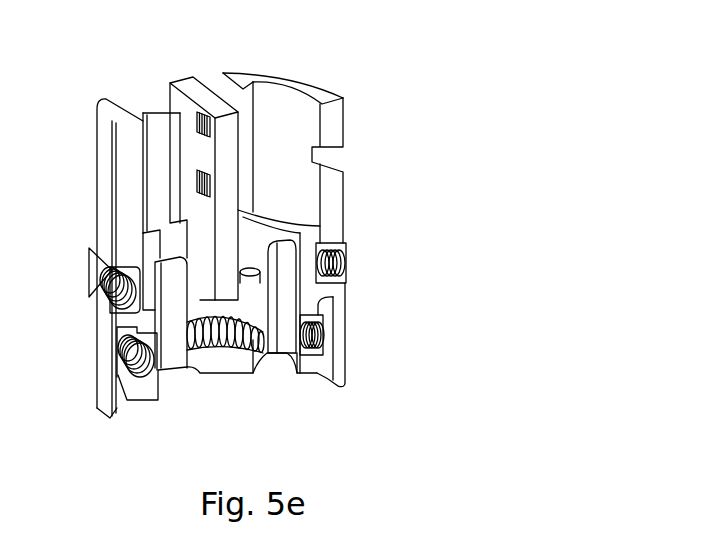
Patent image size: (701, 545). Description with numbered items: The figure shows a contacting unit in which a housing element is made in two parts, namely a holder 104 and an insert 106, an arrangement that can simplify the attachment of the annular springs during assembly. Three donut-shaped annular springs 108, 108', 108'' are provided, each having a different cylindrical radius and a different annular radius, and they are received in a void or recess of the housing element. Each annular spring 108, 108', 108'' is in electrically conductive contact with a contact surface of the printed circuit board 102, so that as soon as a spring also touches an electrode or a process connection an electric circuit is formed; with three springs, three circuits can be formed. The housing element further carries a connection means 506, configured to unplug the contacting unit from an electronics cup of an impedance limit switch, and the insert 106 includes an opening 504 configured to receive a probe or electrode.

The printed circuit board 102 is at (228, 140).
The holder 104 is at (334, 204).
The insert 106 is at (290, 298).
The annular spring 108 is at (395, 276).
The annular spring 108' is at (270, 381).
The annular spring 108'' is at (390, 362).
The opening 504 is at (225, 372).
The connection means 506 is at (160, 130).